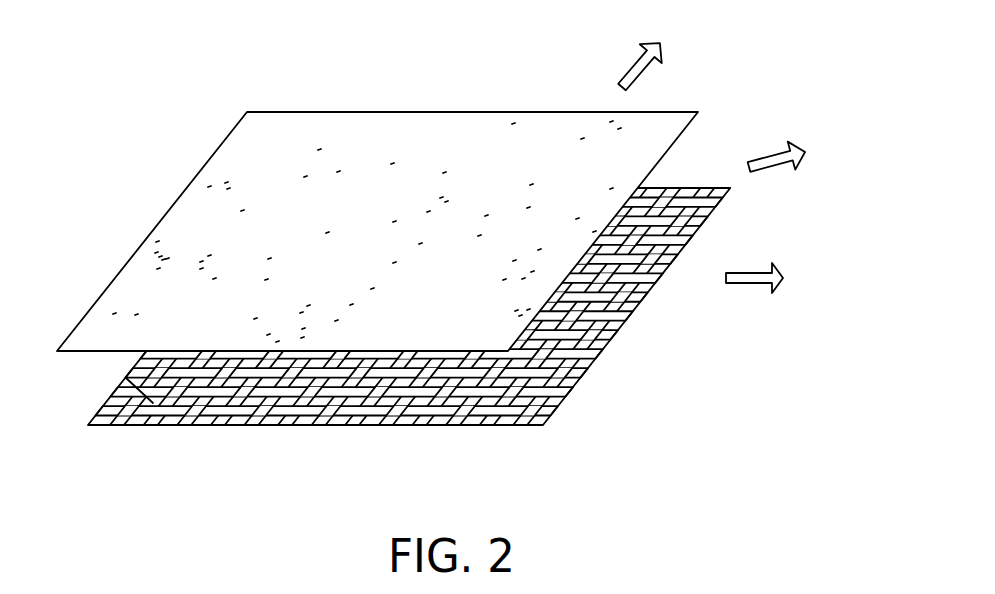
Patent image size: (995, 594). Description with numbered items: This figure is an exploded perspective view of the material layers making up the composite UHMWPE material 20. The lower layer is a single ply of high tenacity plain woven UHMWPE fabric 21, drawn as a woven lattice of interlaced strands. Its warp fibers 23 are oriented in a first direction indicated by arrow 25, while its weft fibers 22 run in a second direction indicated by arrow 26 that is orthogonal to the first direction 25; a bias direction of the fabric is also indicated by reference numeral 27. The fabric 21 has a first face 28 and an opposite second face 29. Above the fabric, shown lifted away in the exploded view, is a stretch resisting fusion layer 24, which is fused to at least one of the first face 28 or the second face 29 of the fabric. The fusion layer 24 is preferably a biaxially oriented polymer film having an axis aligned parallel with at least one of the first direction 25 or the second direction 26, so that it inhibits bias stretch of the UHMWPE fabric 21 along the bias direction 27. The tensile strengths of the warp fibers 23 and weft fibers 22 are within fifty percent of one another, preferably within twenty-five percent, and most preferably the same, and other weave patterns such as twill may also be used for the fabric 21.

The composite UHMWPE material 20 is at (316, 98).
The high tenacity plain woven UHMWPE fabric 21 is at (532, 437).
The weft fibers 22 is at (193, 420).
The warp fibers 23 is at (337, 425).
The stretch resisting fusion layer 24 is at (413, 181).
The first direction arrow 25 is at (745, 284).
The second direction arrow 26 is at (627, 73).
The bias direction 27 is at (750, 165).
The first face 28 is at (126, 378).
The second face 29 is at (436, 430).